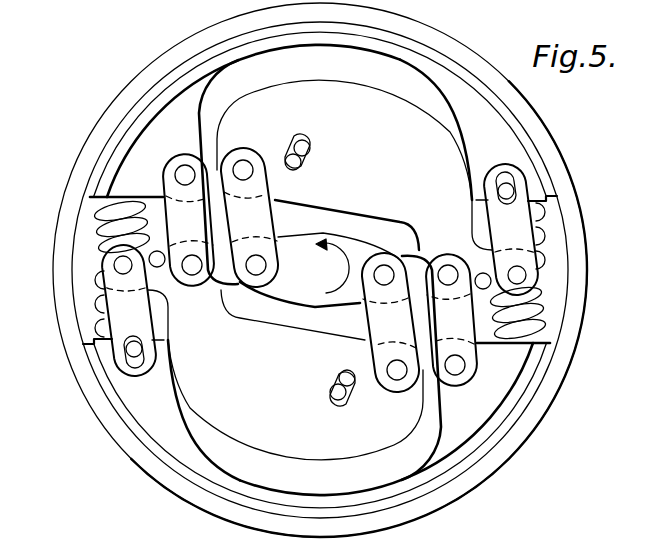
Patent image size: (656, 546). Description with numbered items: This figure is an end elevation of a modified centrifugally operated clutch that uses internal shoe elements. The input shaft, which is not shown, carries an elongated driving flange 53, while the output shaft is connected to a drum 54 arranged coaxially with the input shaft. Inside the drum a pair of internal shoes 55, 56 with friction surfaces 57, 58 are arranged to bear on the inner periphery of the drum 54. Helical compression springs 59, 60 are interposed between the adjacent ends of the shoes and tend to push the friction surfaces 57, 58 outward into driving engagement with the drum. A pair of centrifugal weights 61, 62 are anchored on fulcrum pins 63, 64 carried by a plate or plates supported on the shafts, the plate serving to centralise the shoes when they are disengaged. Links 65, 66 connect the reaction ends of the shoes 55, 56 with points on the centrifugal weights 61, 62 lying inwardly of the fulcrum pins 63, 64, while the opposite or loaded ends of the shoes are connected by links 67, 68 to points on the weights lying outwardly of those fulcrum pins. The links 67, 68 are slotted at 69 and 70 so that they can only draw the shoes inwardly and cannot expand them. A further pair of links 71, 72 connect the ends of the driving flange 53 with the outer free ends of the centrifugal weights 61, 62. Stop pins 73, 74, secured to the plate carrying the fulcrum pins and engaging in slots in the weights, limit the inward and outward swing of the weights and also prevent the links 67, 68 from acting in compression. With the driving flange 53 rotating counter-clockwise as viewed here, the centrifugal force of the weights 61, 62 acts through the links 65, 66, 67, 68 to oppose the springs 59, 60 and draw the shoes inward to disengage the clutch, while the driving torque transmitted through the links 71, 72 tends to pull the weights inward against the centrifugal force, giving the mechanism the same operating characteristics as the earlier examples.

The driving flange 53 is at (300, 280).
The drum 54 is at (90, 152).
The internal shoe 55 is at (155, 417).
The internal shoe 56 is at (157, 113).
The friction surface 57 is at (408, 495).
The friction surface 58 is at (467, 77).
The helical compression spring 59 is at (88, 300).
The helical compression spring 60 is at (505, 328).
The centrifugal weight 61 is at (262, 380).
The centrifugal weight 62 is at (375, 127).
The fulcrum pin 63 is at (150, 254).
The fulcrum pin 64 is at (478, 290).
The link 65 is at (243, 217).
The link 66 is at (458, 313).
The link 67 is at (123, 308).
The link 68 is at (505, 220).
The slot 69 is at (133, 348).
The slot 70 is at (520, 193).
The link 71 is at (183, 211).
The link 72 is at (395, 330).
The stop pin 73 is at (292, 157).
The stop pin 74 is at (340, 378).